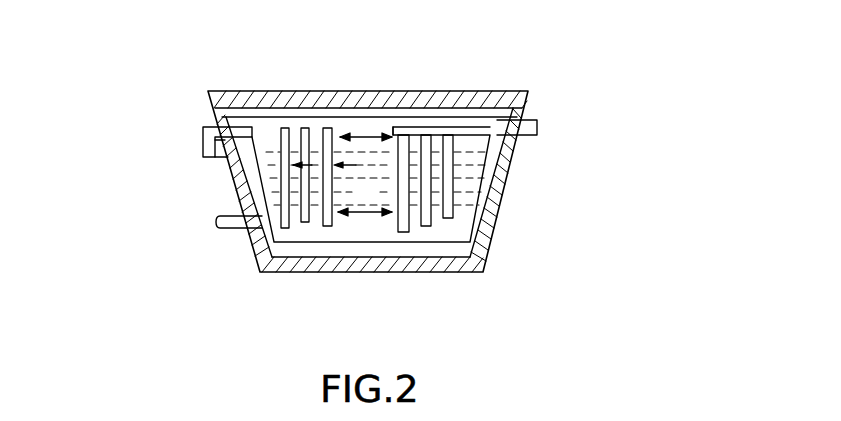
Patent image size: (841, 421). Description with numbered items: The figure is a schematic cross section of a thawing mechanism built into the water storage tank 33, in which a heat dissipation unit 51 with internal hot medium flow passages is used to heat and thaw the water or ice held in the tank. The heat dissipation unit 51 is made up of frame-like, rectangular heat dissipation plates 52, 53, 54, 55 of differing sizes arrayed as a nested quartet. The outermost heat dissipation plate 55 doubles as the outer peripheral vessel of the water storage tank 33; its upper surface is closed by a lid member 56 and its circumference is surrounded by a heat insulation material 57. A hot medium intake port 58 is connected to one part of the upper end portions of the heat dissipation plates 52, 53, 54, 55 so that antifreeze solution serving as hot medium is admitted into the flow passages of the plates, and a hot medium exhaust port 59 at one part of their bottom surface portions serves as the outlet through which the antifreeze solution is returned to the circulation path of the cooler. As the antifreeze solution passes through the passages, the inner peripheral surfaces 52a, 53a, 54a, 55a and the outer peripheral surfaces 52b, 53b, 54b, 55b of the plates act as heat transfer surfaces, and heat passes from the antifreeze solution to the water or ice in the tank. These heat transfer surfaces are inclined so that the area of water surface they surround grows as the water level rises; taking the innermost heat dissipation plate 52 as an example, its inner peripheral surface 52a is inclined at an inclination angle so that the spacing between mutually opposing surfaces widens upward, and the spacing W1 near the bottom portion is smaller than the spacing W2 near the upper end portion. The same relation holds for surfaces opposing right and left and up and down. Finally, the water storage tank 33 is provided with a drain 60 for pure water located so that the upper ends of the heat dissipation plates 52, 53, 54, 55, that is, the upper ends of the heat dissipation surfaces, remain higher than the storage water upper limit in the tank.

The water storage tank 33 is at (544, 103).
The heat dissipation unit 51 is at (455, 260).
The innermost heat dissipation plate 52 is at (402, 235).
The inner peripheral surface of heat dissipation plate 52 52a is at (349, 133).
The outer peripheral surface of heat dissipation plate 52 52b is at (327, 228).
The heat dissipation plate 53 is at (414, 230).
The inner peripheral surface of heat dissipation plate 53 53a is at (318, 132).
The outer peripheral surface of heat dissipation plate 53 53b is at (312, 230).
The heat dissipation plate 54 is at (444, 212).
The inner peripheral surface of heat dissipation plate 54 54a is at (288, 130).
The outer peripheral surface of heat dissipation plate 54 54b is at (286, 230).
The outermost heat dissipation plate 55 is at (487, 169).
The inner peripheral surface of heat dissipation plate 55 55a is at (270, 160).
The outer peripheral surface of heat dissipation plate 55 55b is at (258, 176).
The lid member 56 is at (460, 100).
The heat insulation material 57 is at (411, 95).
The hot medium intake port 58 is at (529, 121).
The hot medium exhaust port 59 is at (170, 222).
The drain 60 is at (203, 146).
The spacing closer to the bottom portion W1 is at (365, 198).
The spacing closer to the upper end portion W2 is at (382, 133).